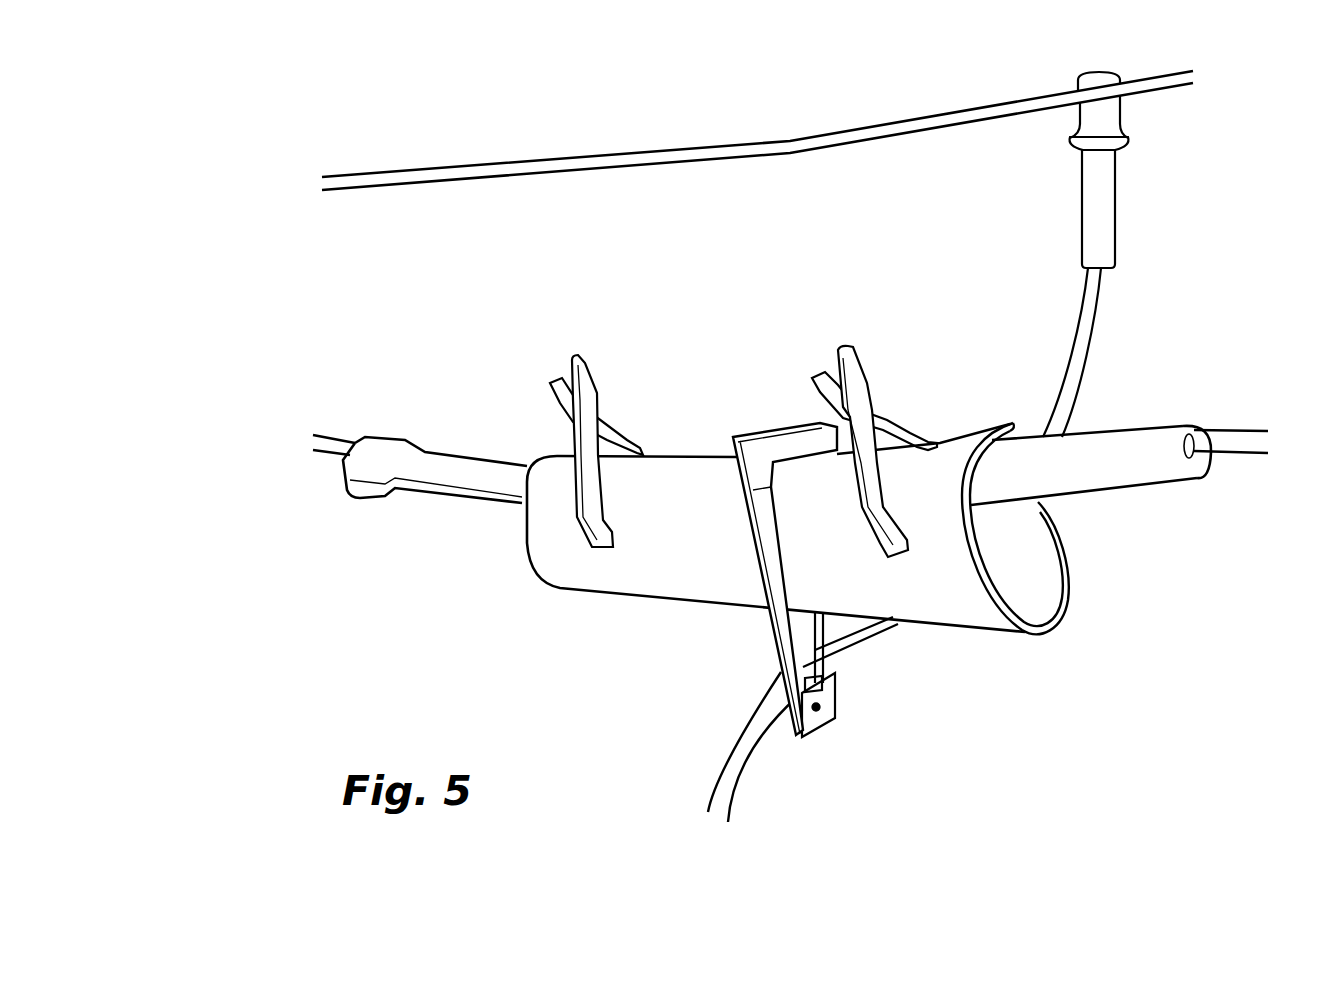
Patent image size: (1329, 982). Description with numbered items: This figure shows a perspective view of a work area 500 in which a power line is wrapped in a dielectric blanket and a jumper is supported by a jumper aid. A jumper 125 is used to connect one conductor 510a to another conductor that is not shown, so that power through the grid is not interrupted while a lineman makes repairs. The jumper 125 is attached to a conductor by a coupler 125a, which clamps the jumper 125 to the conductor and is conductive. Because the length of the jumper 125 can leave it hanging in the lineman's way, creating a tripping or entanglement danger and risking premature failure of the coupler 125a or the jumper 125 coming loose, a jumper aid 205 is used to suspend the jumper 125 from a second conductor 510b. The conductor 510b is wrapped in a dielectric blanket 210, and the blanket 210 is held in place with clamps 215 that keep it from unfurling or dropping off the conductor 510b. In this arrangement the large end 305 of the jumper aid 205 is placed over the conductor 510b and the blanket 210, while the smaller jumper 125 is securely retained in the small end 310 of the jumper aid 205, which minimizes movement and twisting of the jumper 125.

The work area 500 is at (375, 128).
The conductor 510a is at (677, 147).
The conductor 510b is at (332, 438).
The coupler 125a is at (1112, 218).
The jumper 125 is at (1085, 373).
The jumper aid 205 is at (787, 427).
The dielectric blanket 210 is at (1073, 577).
The clamps 215 is at (572, 353).
The large end 305 is at (770, 428).
The small end 310 is at (812, 735).